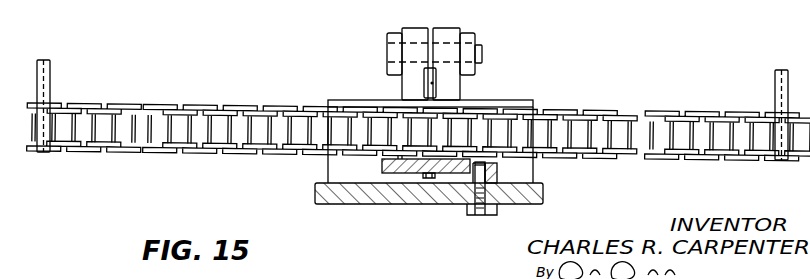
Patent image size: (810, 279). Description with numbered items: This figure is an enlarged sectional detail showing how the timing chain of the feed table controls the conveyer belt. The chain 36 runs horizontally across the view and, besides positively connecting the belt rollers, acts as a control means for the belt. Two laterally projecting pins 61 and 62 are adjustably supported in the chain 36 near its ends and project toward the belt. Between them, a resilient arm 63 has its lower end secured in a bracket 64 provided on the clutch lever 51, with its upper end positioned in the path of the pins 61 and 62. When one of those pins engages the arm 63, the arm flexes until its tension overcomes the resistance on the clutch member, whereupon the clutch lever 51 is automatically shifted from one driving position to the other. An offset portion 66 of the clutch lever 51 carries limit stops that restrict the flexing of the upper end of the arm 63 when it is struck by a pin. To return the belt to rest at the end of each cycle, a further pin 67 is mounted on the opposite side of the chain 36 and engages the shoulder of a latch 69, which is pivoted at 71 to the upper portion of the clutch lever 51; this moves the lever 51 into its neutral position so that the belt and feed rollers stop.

The chain 36 is at (583, 127).
The clutch lever 51 is at (338, 205).
The laterally projecting pin 61 is at (50, 77).
The laterally projecting pin 62 is at (775, 81).
The resilient arm 63 is at (433, 83).
The bracket 64 is at (447, 33).
The offset portion 66 is at (533, 173).
The pin 67 is at (430, 178).
The latch 69 is at (400, 168).
The pivot 71 is at (483, 184).